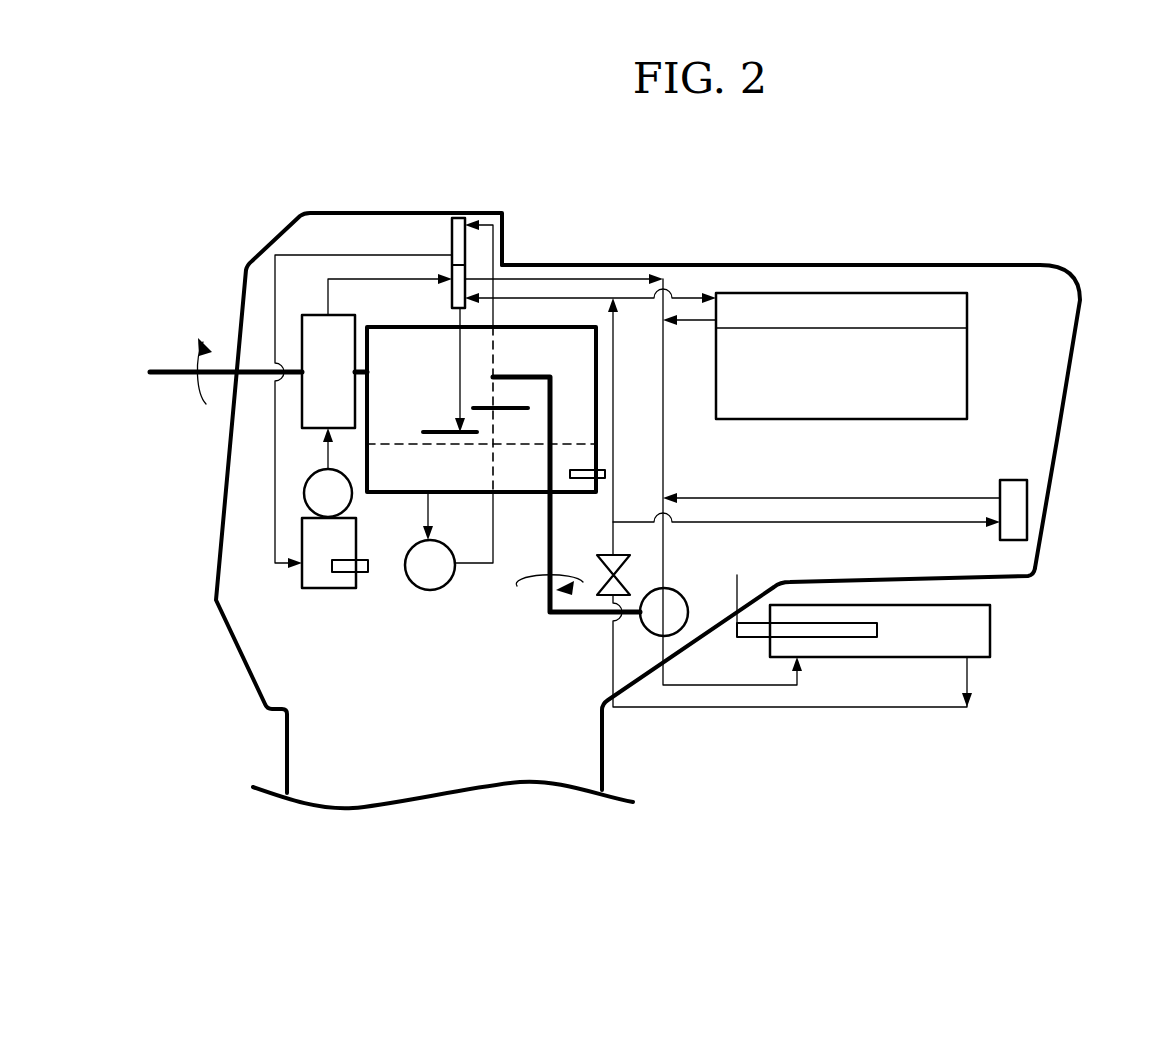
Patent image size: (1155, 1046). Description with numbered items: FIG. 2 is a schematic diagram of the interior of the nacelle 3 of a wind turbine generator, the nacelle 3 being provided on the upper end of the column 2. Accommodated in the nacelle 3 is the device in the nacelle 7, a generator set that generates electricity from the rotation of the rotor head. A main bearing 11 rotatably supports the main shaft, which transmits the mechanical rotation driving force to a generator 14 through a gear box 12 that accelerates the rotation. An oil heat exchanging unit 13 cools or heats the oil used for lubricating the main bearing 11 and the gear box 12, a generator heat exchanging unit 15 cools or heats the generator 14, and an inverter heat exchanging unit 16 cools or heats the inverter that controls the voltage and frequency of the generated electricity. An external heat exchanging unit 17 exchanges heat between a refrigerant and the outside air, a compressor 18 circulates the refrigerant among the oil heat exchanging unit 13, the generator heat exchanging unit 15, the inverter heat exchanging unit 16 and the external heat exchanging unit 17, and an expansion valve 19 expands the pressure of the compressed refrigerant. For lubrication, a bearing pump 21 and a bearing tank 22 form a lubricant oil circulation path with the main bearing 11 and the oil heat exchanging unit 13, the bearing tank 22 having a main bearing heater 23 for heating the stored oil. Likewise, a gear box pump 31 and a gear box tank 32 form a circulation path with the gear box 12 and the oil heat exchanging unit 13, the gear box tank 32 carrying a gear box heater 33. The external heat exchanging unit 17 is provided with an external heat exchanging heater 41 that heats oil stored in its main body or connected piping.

The column 2 is at (605, 758).
The nacelle 3 is at (944, 262).
The device in the nacelle 7 is at (685, 228).
The main bearing 11 is at (302, 322).
The gear box 12 is at (555, 333).
The oil heat exchanging unit 13 is at (452, 234).
The generator 14 is at (962, 374).
The generator heat exchanging unit 15 is at (843, 300).
The inverter heat exchanging unit 16 is at (1020, 510).
The external heat exchanging unit 17 is at (985, 630).
The compressor 18 is at (675, 597).
The expansion valve 19 is at (605, 553).
The bearing pump 21 is at (312, 495).
The bearing tank 22 is at (323, 590).
The main bearing heater 23 is at (366, 574).
The gear box pump 31 is at (430, 573).
The gear box tank 32 is at (510, 480).
The gear box heater 33 is at (605, 474).
The external heat exchanging heater 41 is at (848, 638).